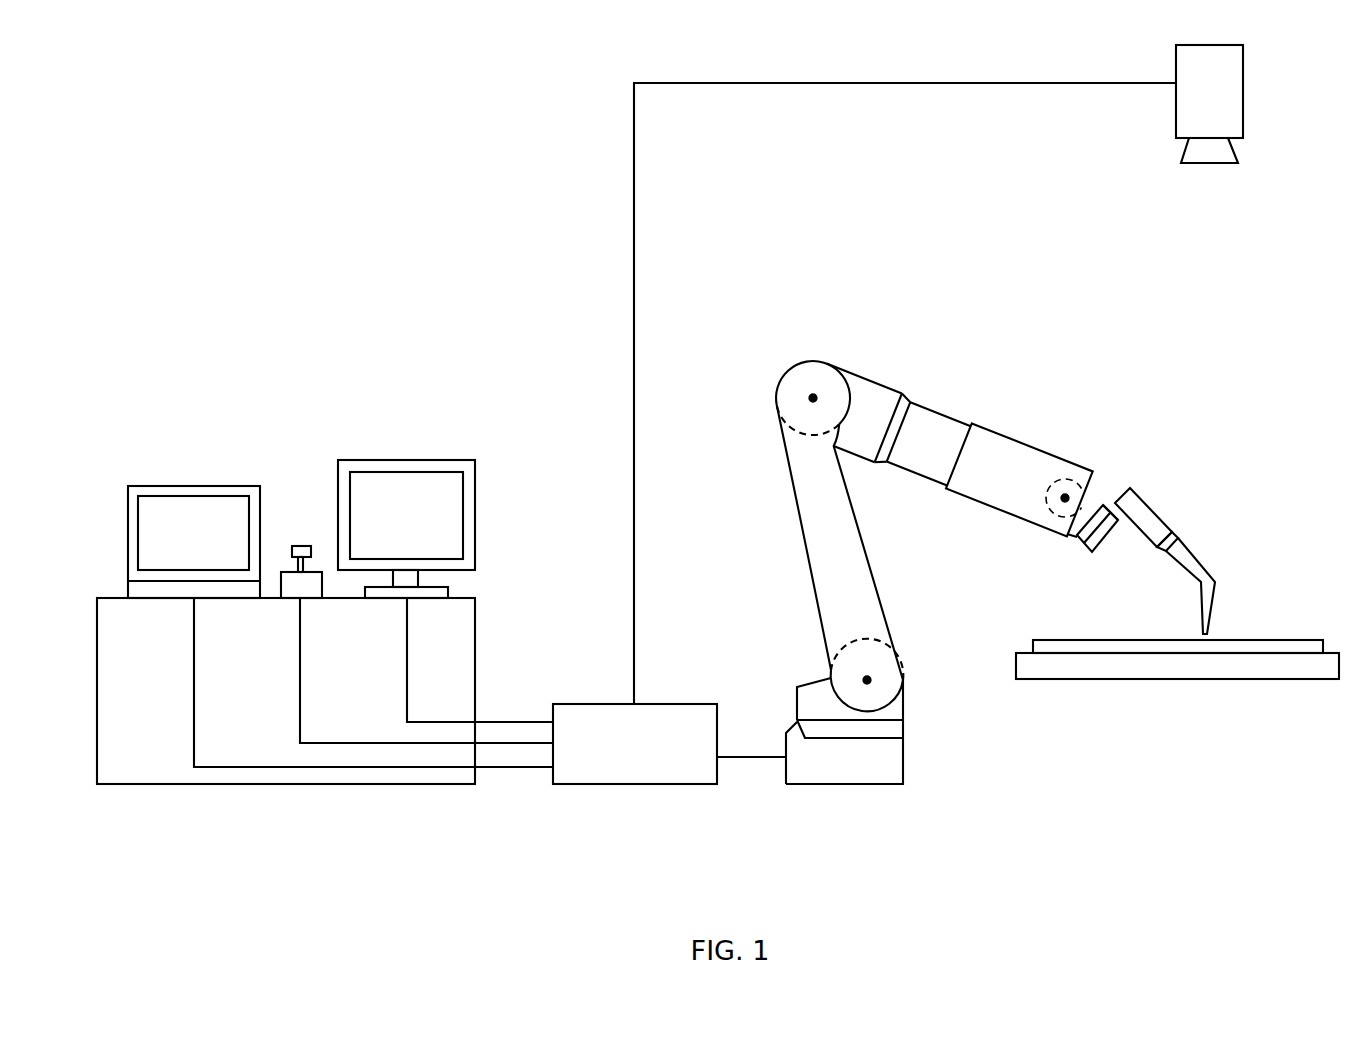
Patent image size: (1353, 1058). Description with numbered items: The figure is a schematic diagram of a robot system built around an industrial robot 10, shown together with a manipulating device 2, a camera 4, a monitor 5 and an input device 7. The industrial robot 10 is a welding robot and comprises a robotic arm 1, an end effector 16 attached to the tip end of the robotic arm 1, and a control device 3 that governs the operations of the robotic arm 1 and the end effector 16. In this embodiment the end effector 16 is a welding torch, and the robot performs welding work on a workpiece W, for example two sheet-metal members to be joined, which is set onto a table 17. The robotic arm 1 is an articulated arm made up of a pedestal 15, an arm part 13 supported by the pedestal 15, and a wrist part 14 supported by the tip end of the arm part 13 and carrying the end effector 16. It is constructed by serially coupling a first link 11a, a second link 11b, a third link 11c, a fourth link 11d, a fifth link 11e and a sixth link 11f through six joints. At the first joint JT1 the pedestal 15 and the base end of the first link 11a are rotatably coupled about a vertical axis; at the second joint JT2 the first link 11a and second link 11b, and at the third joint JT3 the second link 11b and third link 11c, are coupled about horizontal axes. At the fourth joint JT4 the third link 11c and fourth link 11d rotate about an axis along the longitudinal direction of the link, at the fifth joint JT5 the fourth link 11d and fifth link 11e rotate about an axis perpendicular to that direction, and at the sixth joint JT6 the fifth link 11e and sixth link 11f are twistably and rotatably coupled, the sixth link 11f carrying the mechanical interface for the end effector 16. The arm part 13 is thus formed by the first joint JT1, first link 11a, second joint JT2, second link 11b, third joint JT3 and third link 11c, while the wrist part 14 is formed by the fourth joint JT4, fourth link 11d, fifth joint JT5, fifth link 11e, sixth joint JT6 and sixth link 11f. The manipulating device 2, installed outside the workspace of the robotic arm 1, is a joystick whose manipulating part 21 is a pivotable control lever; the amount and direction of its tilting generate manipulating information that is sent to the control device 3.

The robotic arm 1 is at (967, 578).
The manipulating device 2 is at (290, 485).
The control device 3 is at (647, 785).
The camera 4 is at (1243, 92).
The monitor 5 is at (415, 457).
The input device 7 is at (196, 486).
The industrial robot 10 is at (902, 602).
The first link 11a is at (810, 683).
The second link 11b is at (800, 533).
The third link 11c is at (867, 375).
The fourth link 11d is at (1017, 438).
The fifth link 11e is at (1096, 505).
The sixth link 11f is at (1080, 537).
The arm part 13 is at (803, 542).
The wrist part 14 is at (990, 474).
The pedestal 15 is at (786, 732).
The end effector 16 is at (1192, 552).
The table 17 is at (1297, 680).
The manipulating part 21 is at (290, 545).
The workpiece W is at (1286, 638).
The first joint JT1 is at (905, 727).
The second joint JT2 is at (887, 683).
The third joint JT3 is at (797, 388).
The fourth joint JT4 is at (905, 405).
The fifth joint JT5 is at (1067, 478).
The sixth joint JT6 is at (1108, 498).